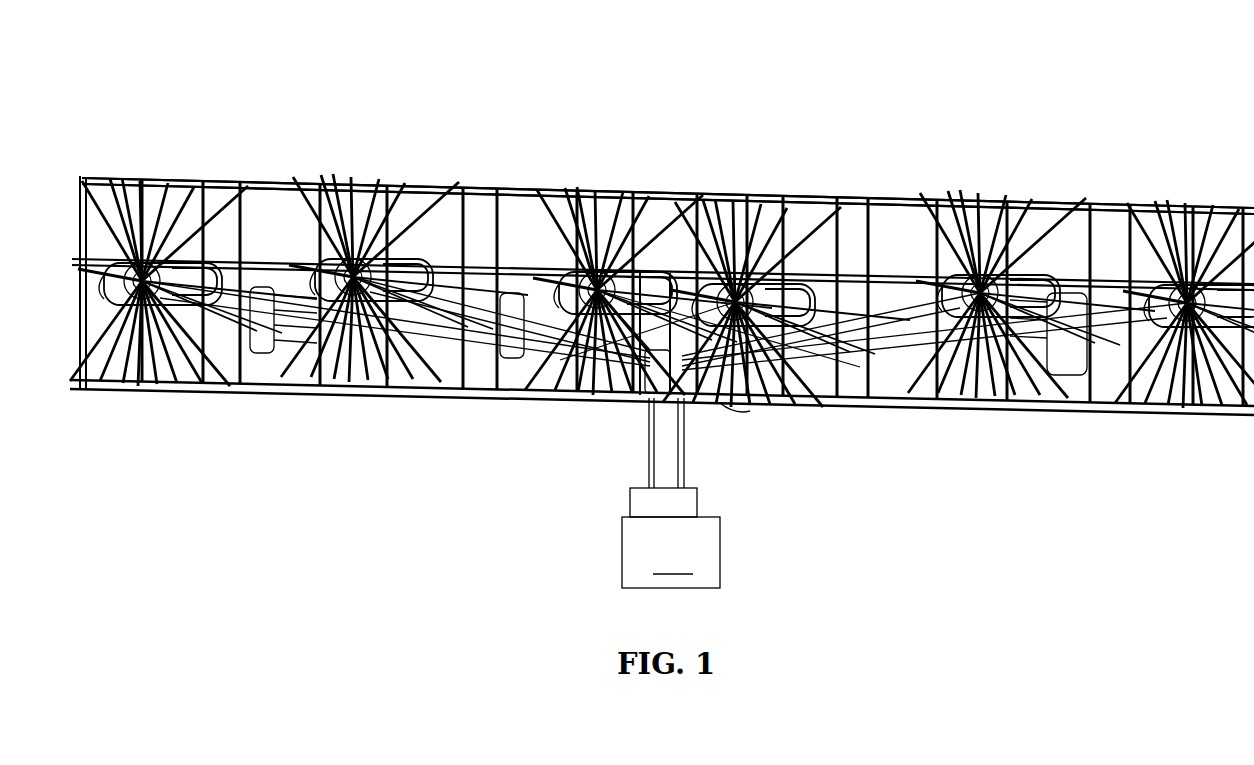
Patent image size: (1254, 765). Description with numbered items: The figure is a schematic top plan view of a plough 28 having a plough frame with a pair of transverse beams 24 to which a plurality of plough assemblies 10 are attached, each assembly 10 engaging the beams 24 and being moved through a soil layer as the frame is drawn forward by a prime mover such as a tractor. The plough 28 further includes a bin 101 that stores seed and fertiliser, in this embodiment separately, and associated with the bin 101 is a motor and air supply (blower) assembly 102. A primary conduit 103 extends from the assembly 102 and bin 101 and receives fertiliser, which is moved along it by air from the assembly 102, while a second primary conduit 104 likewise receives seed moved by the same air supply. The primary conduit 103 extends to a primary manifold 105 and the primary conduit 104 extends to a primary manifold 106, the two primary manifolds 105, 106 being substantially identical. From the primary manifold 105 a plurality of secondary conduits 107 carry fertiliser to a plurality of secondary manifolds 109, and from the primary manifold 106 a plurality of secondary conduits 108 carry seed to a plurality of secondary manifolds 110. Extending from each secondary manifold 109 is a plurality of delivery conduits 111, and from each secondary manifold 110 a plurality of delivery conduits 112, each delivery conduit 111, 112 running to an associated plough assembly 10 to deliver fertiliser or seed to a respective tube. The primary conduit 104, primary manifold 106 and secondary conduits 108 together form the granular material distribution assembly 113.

The spraying system 28 is at (668, 119).
The transverse beams 24 is at (693, 190).
The plough assembly 10 is at (662, 281).
The bin 101 is at (671, 552).
The motor and air supply (blower) assembly 102 is at (699, 484).
The primary conduit 103 is at (623, 380).
The primary conduit 104 is at (746, 406).
The primary manifold 105 is at (600, 407).
The primary manifold 106 is at (687, 441).
The secondary conduits 107 is at (265, 393).
The secondary conduits 108 is at (265, 182).
The secondary manifold 109 is at (140, 395).
The secondary manifold 110 is at (1208, 177).
The delivery conduits 111 is at (220, 180).
The delivery conduits 112 is at (178, 180).
The granular material distribution assembly 113 is at (268, 397).